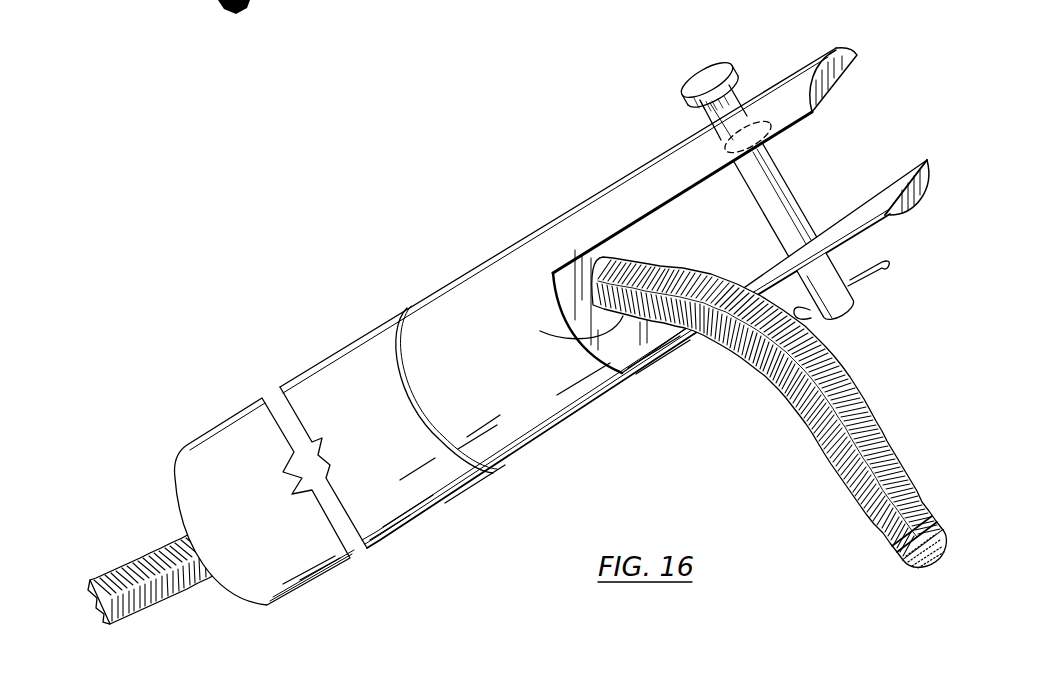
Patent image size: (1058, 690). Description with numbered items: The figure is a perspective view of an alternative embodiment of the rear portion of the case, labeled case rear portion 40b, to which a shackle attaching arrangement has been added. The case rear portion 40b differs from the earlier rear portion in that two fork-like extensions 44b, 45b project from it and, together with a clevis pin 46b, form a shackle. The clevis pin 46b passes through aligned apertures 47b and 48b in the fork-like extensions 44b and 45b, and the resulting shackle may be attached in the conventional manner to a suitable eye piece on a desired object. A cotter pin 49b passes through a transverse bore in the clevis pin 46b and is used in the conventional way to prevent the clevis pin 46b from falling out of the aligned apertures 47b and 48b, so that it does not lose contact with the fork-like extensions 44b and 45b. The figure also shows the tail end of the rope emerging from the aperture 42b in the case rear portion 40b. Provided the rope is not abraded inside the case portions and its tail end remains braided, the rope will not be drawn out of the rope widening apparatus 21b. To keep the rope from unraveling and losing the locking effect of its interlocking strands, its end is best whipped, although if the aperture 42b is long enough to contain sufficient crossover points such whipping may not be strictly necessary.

The rope widening apparatus 21b is at (407, 283).
The case rear portion 40b is at (534, 432).
The aperture 42b is at (597, 345).
The fork-like extension 44b is at (780, 90).
The fork-like extension 45b is at (880, 226).
The clevis pin 46b is at (707, 77).
The aperture 47b is at (793, 127).
The aperture 48b is at (803, 235).
The cotter pin 49b is at (872, 262).